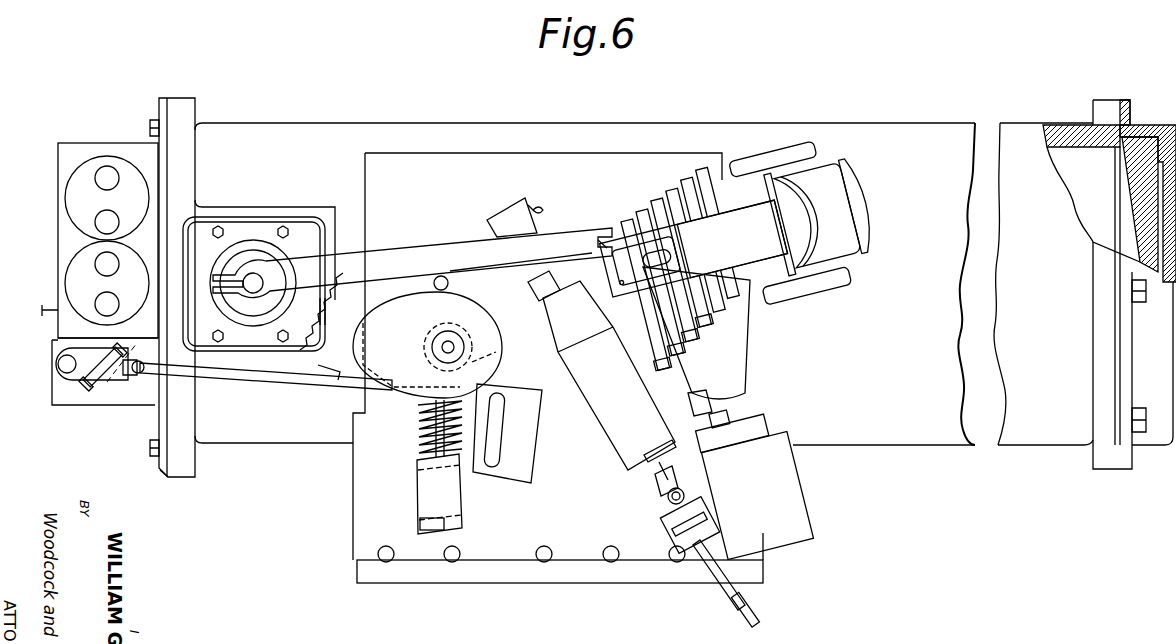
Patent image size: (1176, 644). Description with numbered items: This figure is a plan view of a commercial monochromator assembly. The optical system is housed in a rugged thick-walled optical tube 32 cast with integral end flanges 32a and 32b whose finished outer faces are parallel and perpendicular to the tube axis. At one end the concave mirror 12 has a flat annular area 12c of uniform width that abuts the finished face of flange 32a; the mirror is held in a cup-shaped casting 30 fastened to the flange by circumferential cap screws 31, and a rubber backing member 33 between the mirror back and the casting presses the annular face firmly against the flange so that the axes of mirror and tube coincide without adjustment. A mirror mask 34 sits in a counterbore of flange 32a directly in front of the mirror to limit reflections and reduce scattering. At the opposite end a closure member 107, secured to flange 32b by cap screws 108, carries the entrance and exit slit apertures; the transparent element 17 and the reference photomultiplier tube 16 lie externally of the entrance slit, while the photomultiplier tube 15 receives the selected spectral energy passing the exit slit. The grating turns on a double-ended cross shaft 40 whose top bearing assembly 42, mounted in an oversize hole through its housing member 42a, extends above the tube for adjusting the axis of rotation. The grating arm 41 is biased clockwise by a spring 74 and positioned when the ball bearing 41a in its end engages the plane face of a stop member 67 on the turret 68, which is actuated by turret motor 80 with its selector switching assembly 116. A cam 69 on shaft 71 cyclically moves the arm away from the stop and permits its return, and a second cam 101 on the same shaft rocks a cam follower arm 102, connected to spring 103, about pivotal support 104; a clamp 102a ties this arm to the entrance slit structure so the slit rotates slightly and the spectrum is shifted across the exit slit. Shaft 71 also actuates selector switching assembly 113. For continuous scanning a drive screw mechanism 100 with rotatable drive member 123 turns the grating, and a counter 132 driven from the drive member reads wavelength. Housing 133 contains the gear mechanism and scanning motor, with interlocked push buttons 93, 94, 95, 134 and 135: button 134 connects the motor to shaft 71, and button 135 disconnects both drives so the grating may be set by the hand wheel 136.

The mirror 12 is at (1146, 206).
The flat annular area 12c is at (1110, 130).
The photomultiplier tube 15 is at (68, 203).
The reference photomultiplier tube 16 is at (73, 277).
The transparent element 17 is at (100, 375).
The cup-shaped casting 30 is at (1146, 440).
The cap screws 31 is at (1140, 302).
The optical tube 32 is at (868, 132).
The end flange 32a is at (1105, 103).
The end flange 32b is at (190, 108).
The rubber backing member 33 is at (1163, 128).
The mirror mask 34 is at (1114, 173).
The cross shaft 40 is at (253, 293).
The grating arm 41 is at (386, 252).
The ball bearing 41a is at (618, 240).
The top bearing assembly 42 is at (252, 243).
The housing member 42a is at (227, 226).
The stop member 67 is at (666, 372).
The turret 68 is at (713, 369).
The cam 69 is at (466, 306).
The shaft 71 is at (440, 349).
The spring 74 is at (335, 300).
The turret motor 80 is at (865, 210).
The push button 93 is at (541, 563).
The push button 94 is at (607, 563).
The push button 95 is at (672, 563).
The drive screw mechanism 100 is at (642, 428).
The cam 101 is at (476, 353).
The cam follower arm 102 is at (340, 385).
The clamp 102a is at (125, 384).
The spring 103 is at (326, 371).
The pivotal support 104 is at (137, 375).
The closure member 107 is at (170, 478).
The cap screws 108 is at (151, 124).
The selector switching assembly 113 is at (416, 457).
The selector switching assembly 116 is at (806, 511).
The drive member 123 is at (658, 470).
The counter 132 is at (692, 552).
The housing 133 is at (367, 530).
The push button 134 is at (449, 563).
The push button 135 is at (383, 563).
The hand wheel 136 is at (750, 607).